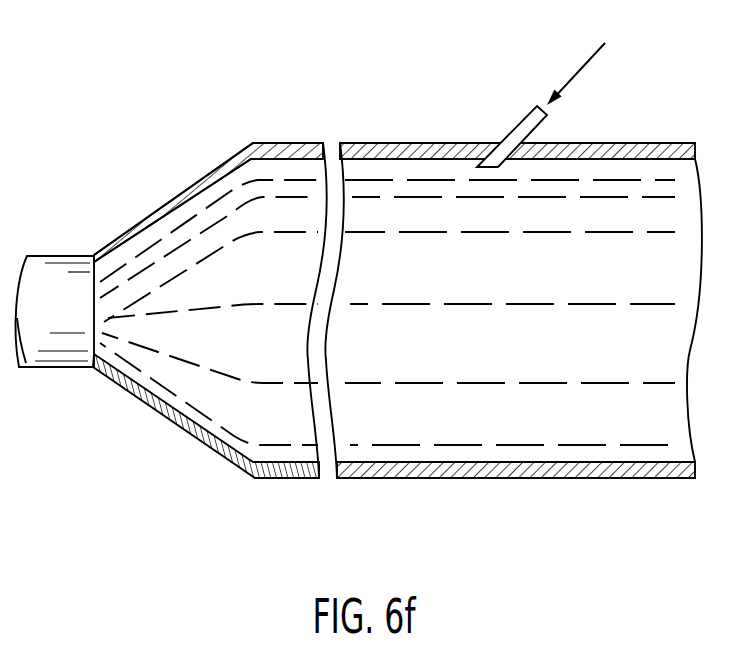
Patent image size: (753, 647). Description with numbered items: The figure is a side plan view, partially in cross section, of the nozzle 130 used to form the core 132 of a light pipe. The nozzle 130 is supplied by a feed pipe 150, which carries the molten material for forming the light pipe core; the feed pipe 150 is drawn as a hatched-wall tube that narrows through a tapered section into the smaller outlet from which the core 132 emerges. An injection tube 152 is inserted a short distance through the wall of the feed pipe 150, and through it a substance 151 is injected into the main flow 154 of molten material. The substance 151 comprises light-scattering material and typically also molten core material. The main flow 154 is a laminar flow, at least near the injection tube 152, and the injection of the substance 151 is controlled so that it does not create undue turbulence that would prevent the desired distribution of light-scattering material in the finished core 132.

The nozzle 130 is at (156, 179).
The core 132 is at (62, 298).
The feed pipe 150 is at (447, 479).
The substance 151 is at (571, 78).
The injection tube 152 is at (520, 131).
The main flow 154 is at (487, 296).